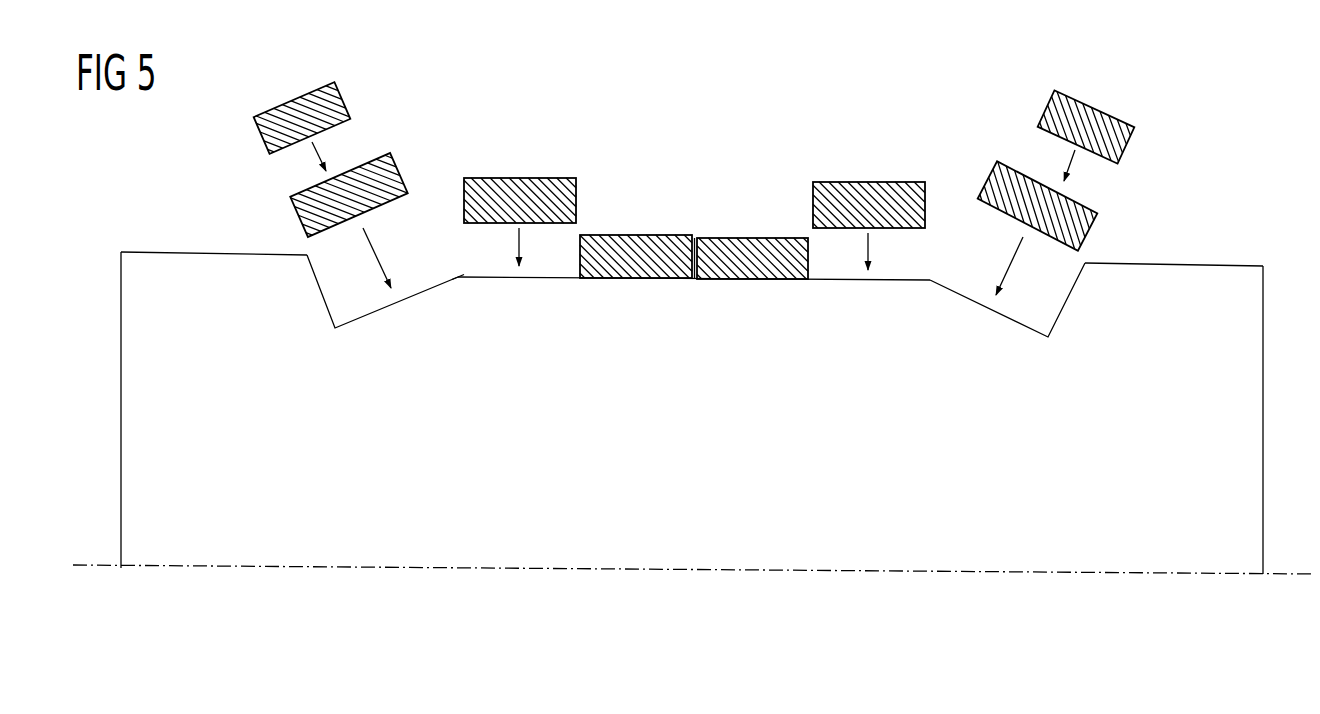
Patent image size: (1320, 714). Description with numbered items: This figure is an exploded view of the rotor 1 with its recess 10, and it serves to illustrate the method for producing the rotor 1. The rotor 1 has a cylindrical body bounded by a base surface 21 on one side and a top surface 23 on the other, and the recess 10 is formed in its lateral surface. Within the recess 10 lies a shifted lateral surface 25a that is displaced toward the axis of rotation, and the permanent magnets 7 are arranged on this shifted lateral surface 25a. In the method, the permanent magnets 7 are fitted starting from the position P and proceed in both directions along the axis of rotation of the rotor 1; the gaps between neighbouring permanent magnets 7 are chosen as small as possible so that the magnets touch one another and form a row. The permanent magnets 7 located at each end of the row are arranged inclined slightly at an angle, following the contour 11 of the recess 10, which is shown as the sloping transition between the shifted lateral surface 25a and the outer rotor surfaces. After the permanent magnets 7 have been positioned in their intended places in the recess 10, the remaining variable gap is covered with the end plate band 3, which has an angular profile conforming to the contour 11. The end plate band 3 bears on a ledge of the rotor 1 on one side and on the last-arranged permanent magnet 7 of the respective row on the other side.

The rotor 1 is at (762, 106).
The end plate band 3 is at (293, 105).
The permanent magnets 7 is at (516, 185).
The recess 10 is at (550, 283).
The contour of the recess 11 is at (403, 306).
The base surface 21 is at (118, 292).
The top surface 23 is at (1268, 295).
The shifted lateral surface 25a is at (480, 271).
The position P is at (695, 272).